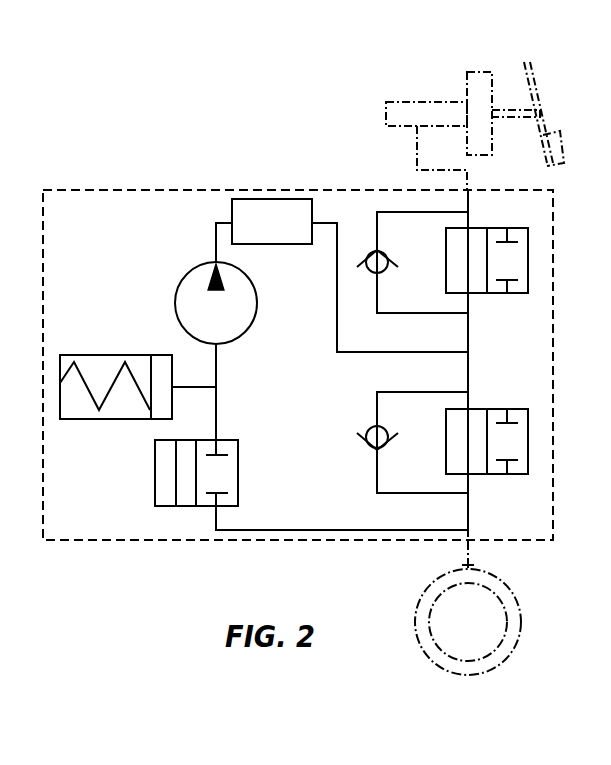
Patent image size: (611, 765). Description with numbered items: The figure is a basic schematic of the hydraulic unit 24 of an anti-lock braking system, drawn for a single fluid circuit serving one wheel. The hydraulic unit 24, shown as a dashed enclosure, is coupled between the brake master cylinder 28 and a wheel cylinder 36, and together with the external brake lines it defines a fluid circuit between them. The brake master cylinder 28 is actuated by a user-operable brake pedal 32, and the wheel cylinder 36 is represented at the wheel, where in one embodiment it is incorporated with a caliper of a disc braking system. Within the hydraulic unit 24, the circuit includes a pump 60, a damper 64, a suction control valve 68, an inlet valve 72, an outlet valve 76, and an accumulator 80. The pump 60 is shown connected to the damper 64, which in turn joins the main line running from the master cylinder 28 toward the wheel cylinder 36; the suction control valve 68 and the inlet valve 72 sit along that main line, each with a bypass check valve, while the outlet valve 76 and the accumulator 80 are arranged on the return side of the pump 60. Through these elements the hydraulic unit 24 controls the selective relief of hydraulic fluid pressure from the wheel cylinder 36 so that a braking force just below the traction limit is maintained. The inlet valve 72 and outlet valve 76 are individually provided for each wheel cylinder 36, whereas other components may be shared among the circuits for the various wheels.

The hydraulic unit 24 is at (177, 189).
The brake master cylinder 28 is at (418, 90).
The brake pedal 32 is at (562, 146).
The wheel cylinder 36 is at (530, 606).
The pump 60 is at (229, 322).
The damper 64 is at (301, 234).
The suction control valve 68 is at (533, 261).
The inlet valve 72 is at (522, 397).
The outlet valve 76 is at (147, 494).
The accumulator 80 is at (101, 355).